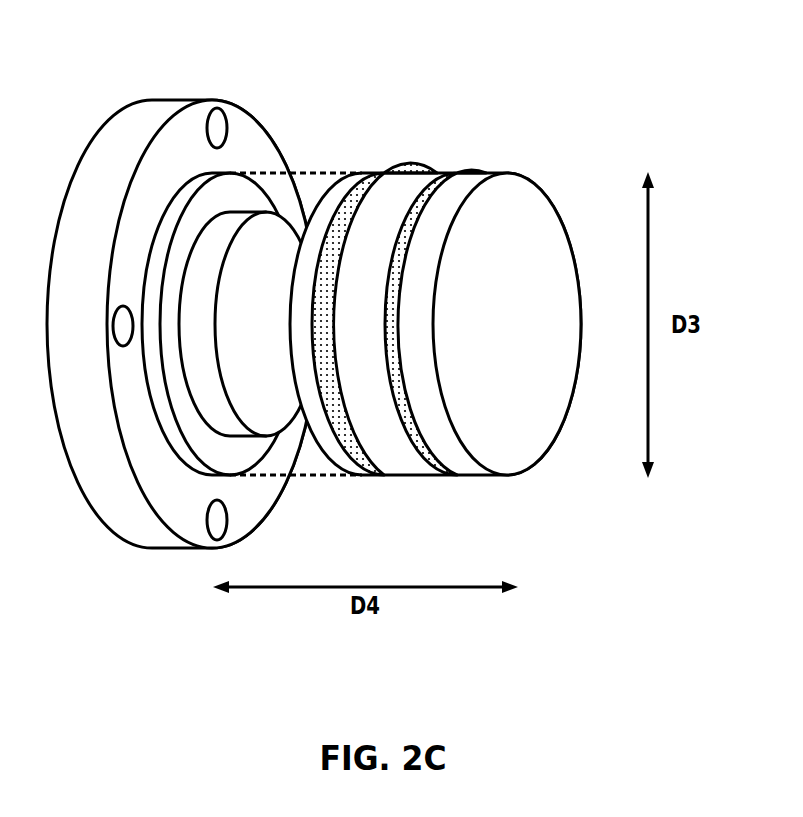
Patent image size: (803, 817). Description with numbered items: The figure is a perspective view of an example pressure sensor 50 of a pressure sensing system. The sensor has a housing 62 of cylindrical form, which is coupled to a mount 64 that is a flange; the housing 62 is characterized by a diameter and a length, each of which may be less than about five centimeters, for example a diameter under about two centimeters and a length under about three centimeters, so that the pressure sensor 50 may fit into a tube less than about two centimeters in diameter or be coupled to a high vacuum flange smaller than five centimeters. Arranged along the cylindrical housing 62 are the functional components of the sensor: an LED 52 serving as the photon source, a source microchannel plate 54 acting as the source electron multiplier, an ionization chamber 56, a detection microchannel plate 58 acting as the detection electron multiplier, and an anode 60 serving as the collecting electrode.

The pressure sensor 50 is at (314, 284).
The LED 52 is at (240, 337).
The source microchannel plate 54 is at (435, 303).
The ionization chamber 56 is at (380, 171).
The detection microchannel plate 58 is at (440, 174).
The anode 60 is at (494, 337).
The housing 62 is at (231, 174).
The mount 64 is at (215, 100).